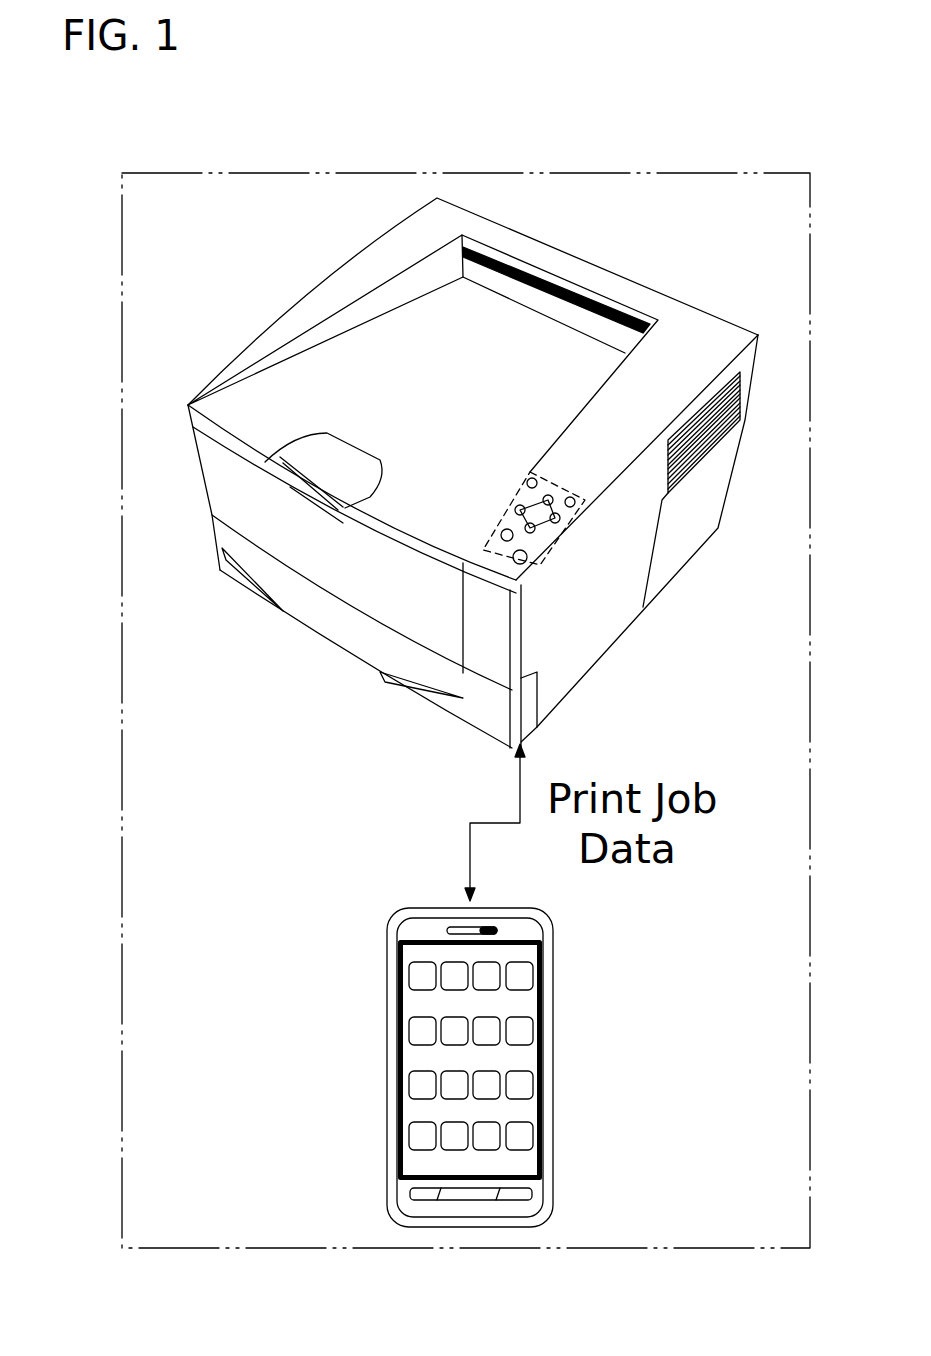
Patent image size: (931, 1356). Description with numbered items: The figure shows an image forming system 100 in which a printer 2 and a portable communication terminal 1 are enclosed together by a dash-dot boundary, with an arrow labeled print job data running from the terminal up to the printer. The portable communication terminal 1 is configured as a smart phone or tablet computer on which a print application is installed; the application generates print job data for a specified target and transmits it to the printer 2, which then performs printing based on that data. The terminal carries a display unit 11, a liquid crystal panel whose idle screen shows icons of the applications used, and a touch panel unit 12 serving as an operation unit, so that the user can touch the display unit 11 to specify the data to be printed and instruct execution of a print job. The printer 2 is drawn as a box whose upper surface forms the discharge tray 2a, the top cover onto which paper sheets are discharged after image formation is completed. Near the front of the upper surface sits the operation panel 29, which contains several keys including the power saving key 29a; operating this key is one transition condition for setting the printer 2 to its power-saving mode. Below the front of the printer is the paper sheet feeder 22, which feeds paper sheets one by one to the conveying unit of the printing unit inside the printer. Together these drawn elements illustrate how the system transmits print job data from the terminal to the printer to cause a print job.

The image forming system 100 is at (463, 173).
The printer 2 is at (674, 590).
The discharge tray 2a is at (253, 423).
The operation panel 29 is at (530, 473).
The power saving key 29a is at (500, 532).
The paper sheet feeder 22 is at (458, 720).
The portable communication terminal 1 is at (426, 1016).
The display unit 11 is at (419, 1060).
The touch panel unit 12 is at (418, 1057).